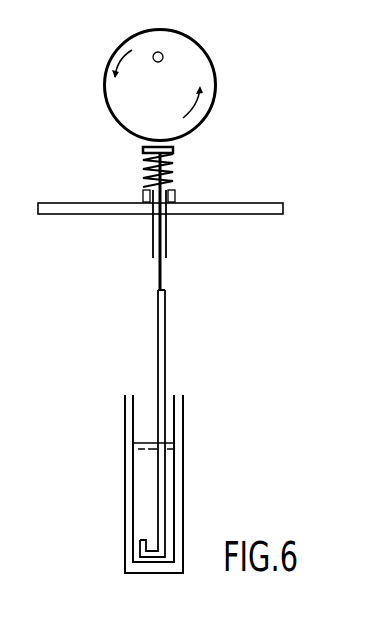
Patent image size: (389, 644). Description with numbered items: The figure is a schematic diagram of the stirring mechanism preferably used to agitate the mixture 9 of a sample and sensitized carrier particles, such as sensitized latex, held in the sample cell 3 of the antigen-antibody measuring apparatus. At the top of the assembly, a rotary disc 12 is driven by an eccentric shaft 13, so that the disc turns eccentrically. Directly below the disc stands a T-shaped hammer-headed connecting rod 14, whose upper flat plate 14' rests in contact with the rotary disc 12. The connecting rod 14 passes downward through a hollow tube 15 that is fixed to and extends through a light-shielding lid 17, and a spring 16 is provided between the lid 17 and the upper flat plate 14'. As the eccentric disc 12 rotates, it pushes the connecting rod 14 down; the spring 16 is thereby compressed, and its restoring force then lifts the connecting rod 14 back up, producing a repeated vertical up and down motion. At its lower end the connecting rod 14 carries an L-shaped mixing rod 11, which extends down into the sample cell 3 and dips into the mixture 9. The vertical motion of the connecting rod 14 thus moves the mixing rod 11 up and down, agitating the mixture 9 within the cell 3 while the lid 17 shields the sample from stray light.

The sample cell 3 is at (181, 480).
The mixture 9 is at (130, 478).
The L-shaped mixing rod 11 is at (157, 342).
The rotary disc 12 is at (216, 77).
The eccentric shaft 13 is at (163, 55).
The T-shaped hammer-headed connecting rod 14 is at (184, 223).
The upper flat plate 14' is at (136, 151).
The hollow tube 15 is at (167, 235).
The spring 16 is at (174, 158).
The light-shielding lid 17 is at (253, 203).